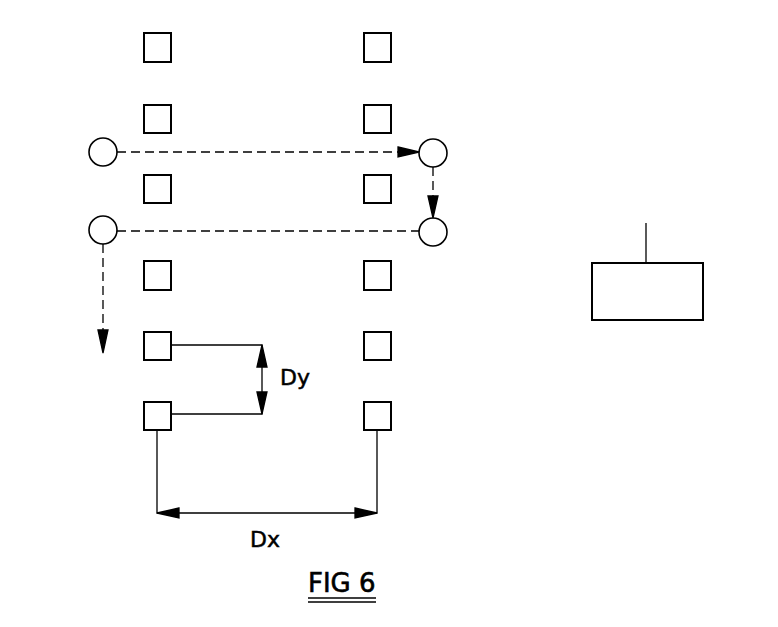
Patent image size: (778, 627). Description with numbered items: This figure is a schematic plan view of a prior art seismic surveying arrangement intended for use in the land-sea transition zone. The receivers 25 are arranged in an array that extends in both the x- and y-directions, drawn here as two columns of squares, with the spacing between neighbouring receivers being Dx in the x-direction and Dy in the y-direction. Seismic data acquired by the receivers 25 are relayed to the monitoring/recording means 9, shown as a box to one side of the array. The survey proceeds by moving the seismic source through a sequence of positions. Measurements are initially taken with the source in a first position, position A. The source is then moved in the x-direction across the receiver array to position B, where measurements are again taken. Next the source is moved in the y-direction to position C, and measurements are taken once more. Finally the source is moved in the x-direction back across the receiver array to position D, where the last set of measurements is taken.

The receivers 25 is at (392, 116).
The monitoring/recording means 9 is at (647, 271).
The first position A is at (94, 142).
The position B is at (443, 143).
The position C is at (94, 241).
The position D is at (442, 243).